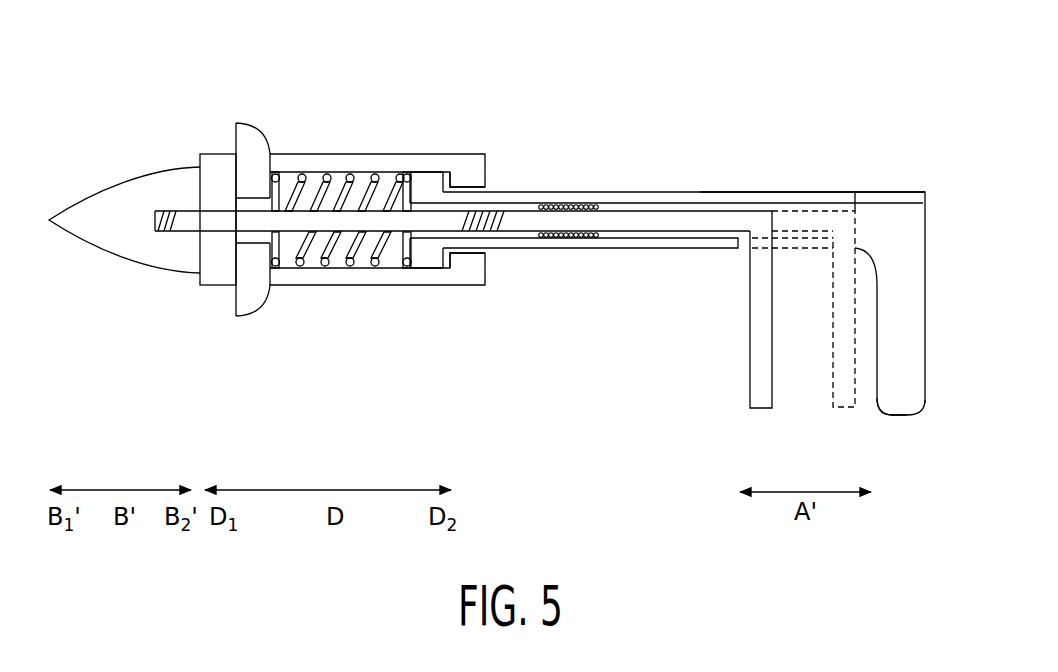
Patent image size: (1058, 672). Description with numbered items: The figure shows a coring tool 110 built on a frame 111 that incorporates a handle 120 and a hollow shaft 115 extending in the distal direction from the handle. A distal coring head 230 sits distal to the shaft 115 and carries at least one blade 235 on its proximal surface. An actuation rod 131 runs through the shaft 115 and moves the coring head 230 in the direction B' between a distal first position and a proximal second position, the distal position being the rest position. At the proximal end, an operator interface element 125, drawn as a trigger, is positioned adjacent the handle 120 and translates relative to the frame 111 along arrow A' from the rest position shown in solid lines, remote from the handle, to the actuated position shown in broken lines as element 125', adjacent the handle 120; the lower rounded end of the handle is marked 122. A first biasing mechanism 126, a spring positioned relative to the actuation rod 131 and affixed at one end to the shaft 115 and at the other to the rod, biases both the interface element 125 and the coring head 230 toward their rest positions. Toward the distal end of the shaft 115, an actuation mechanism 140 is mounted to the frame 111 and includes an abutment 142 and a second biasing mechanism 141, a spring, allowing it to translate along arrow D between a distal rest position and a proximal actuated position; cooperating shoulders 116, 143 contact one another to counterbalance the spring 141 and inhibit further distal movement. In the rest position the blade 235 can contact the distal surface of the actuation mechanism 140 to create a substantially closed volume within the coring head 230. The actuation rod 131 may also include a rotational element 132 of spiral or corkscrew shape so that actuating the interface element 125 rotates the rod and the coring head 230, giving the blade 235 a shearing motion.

The coring tool 110 is at (889, 112).
The frame 111 is at (812, 190).
The hollow shaft 115 is at (707, 193).
The shoulder 116 is at (440, 265).
The handle 120 is at (910, 418).
The rounded foot bottom 122 is at (877, 395).
The operator interface element 125 is at (716, 323).
The operator interface element in actuated position 125' is at (803, 332).
The first biasing mechanism 126 is at (572, 235).
The actuation rod 131 is at (530, 218).
The rotational element 132 is at (486, 218).
The actuation mechanism 140 is at (329, 303).
The second biasing mechanism 141 is at (363, 253).
The abutment 142 is at (236, 316).
The shoulder 143 is at (448, 264).
The distal coring head 230 is at (120, 268).
The blade 235 is at (197, 286).